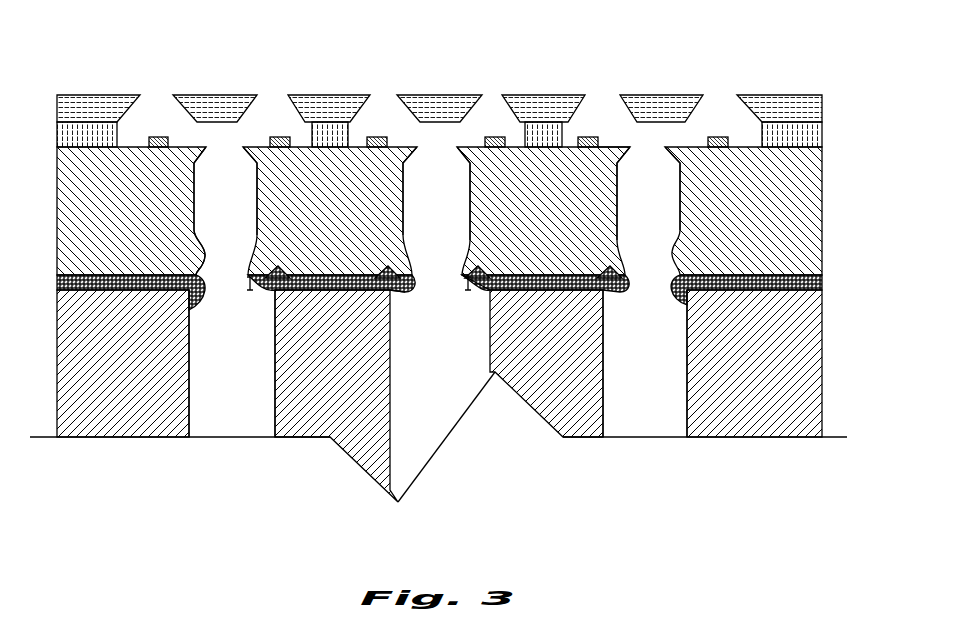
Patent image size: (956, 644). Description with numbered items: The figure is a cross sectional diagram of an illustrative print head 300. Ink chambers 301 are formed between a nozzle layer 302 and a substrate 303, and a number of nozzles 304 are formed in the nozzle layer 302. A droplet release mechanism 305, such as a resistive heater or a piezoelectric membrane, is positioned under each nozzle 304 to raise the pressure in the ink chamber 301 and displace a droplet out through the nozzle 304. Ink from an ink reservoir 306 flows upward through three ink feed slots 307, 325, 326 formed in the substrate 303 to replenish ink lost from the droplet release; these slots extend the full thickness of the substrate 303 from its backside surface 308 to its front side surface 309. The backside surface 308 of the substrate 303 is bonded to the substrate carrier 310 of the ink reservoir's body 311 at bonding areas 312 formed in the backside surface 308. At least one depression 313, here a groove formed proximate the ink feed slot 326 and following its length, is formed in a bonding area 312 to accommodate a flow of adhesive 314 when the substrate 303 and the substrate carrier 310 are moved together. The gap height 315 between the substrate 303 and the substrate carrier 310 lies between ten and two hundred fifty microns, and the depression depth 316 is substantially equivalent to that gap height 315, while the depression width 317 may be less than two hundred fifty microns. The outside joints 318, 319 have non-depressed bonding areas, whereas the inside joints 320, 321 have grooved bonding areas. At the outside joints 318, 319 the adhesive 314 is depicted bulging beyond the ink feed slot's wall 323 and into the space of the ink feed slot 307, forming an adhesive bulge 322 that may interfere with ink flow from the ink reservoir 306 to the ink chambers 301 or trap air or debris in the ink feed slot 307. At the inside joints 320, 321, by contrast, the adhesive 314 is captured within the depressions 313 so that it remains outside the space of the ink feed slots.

The print head 300 is at (118, 56).
The ink chamber 301 is at (288, 133).
The nozzle layer 302 is at (341, 102).
The substrate 303 is at (472, 178).
The nozzle 304 is at (505, 78).
The droplet release mechanism 305 is at (382, 137).
The ink reservoir 306 is at (248, 428).
The ink feed slot 307 is at (243, 258).
The backside surface 308 is at (470, 279).
The front side surface 309 is at (610, 147).
The substrate carrier 310 is at (603, 318).
The ink reservoir's body 311 is at (687, 412).
The bonding area 312 is at (600, 290).
The depression 313 is at (603, 268).
The adhesive 314 is at (392, 292).
The gap height 315 is at (250, 290).
The depression depth 316 is at (465, 279).
The depression width 317 is at (392, 280).
The outside joint 318 is at (202, 321).
The outside joint 319 is at (679, 322).
The inside joint 320 is at (402, 354).
The inside joint 321 is at (475, 333).
The adhesive bulge 322 is at (197, 248).
The ink feed slot's wall 323 is at (195, 194).
The ink feed slot 325 is at (455, 218).
The ink feed slot 326 is at (665, 207).